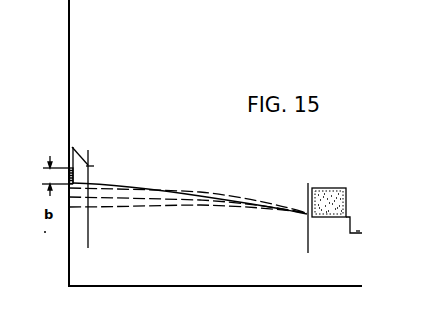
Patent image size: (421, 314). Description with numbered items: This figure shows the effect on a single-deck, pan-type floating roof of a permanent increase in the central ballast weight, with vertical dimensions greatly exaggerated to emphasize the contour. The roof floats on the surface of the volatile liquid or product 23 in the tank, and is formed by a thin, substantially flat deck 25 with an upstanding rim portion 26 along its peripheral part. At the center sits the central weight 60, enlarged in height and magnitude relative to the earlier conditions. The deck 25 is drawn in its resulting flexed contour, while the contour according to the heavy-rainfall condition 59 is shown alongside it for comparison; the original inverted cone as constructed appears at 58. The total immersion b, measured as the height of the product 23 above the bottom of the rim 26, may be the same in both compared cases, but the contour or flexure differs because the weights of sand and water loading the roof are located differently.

The volatile liquid or product 23 is at (70, 147).
The rim portion 26 is at (82, 150).
The deck 25 is at (215, 195).
The contour according to Figure 14 59 is at (170, 190).
The original cone 58 is at (200, 201).
The central weight 60 is at (313, 187).